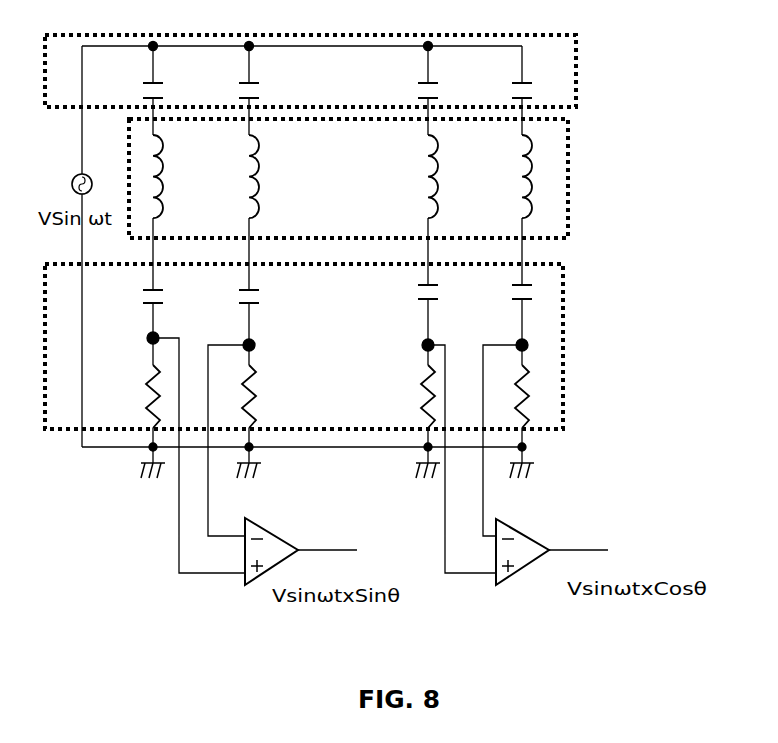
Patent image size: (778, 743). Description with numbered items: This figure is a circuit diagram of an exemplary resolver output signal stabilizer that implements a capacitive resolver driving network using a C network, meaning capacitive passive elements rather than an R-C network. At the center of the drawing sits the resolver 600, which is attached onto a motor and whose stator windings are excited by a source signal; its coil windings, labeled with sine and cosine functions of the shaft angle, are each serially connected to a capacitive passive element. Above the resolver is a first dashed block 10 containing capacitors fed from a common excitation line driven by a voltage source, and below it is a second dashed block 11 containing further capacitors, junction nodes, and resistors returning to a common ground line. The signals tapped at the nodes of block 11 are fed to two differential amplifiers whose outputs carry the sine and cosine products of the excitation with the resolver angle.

The first electrode group A 10 is at (576, 63).
The resolver 600 is at (568, 198).
The second electrode group B 11 is at (563, 292).